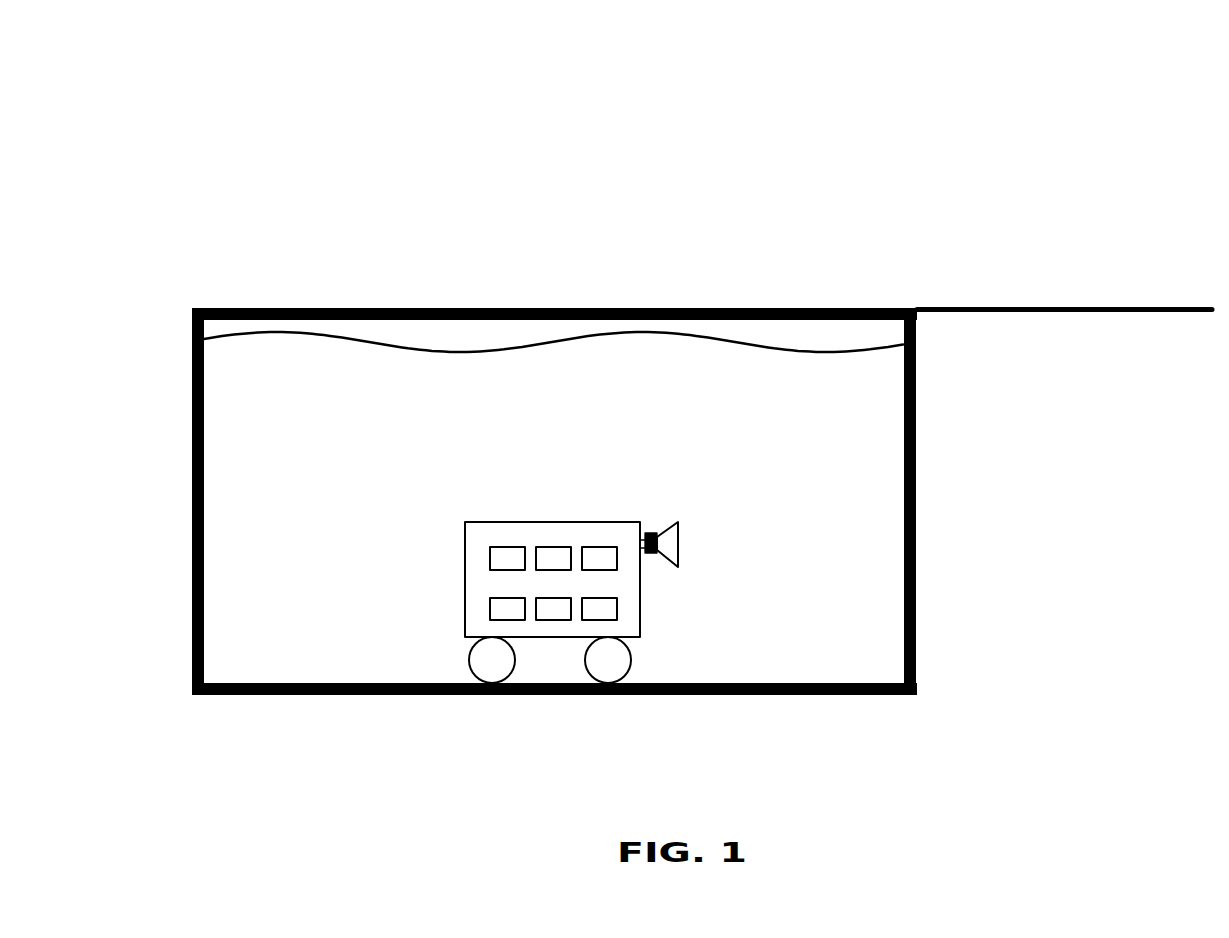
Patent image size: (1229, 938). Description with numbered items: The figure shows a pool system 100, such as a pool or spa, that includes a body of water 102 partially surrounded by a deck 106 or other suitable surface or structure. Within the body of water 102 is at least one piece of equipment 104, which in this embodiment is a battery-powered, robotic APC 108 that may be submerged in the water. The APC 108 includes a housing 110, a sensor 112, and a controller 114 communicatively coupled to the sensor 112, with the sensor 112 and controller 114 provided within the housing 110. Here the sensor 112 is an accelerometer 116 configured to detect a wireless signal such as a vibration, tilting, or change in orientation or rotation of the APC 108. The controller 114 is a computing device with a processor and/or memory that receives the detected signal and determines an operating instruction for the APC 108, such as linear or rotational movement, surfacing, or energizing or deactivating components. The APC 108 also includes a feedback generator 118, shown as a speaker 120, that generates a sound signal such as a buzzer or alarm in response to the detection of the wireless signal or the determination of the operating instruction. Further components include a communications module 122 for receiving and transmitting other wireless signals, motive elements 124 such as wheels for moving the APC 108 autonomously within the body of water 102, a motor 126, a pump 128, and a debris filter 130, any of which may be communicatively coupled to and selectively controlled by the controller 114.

The pool system 100 is at (418, 120).
The body of water 102 is at (285, 432).
The piece of equipment 104 is at (353, 456).
The deck 106 is at (830, 130).
The APC 108 is at (465, 580).
The housing 110 is at (478, 541).
The sensor 112 is at (508, 553).
The controller 114 is at (565, 553).
The accelerometer 116 is at (495, 553).
The feedback generator 118 is at (651, 533).
The speaker 120 is at (672, 530).
The communications module 122 is at (604, 548).
The motive elements 124 is at (492, 663).
The motor 126 is at (508, 608).
The pump 128 is at (553, 610).
The debris filter 130 is at (600, 608).